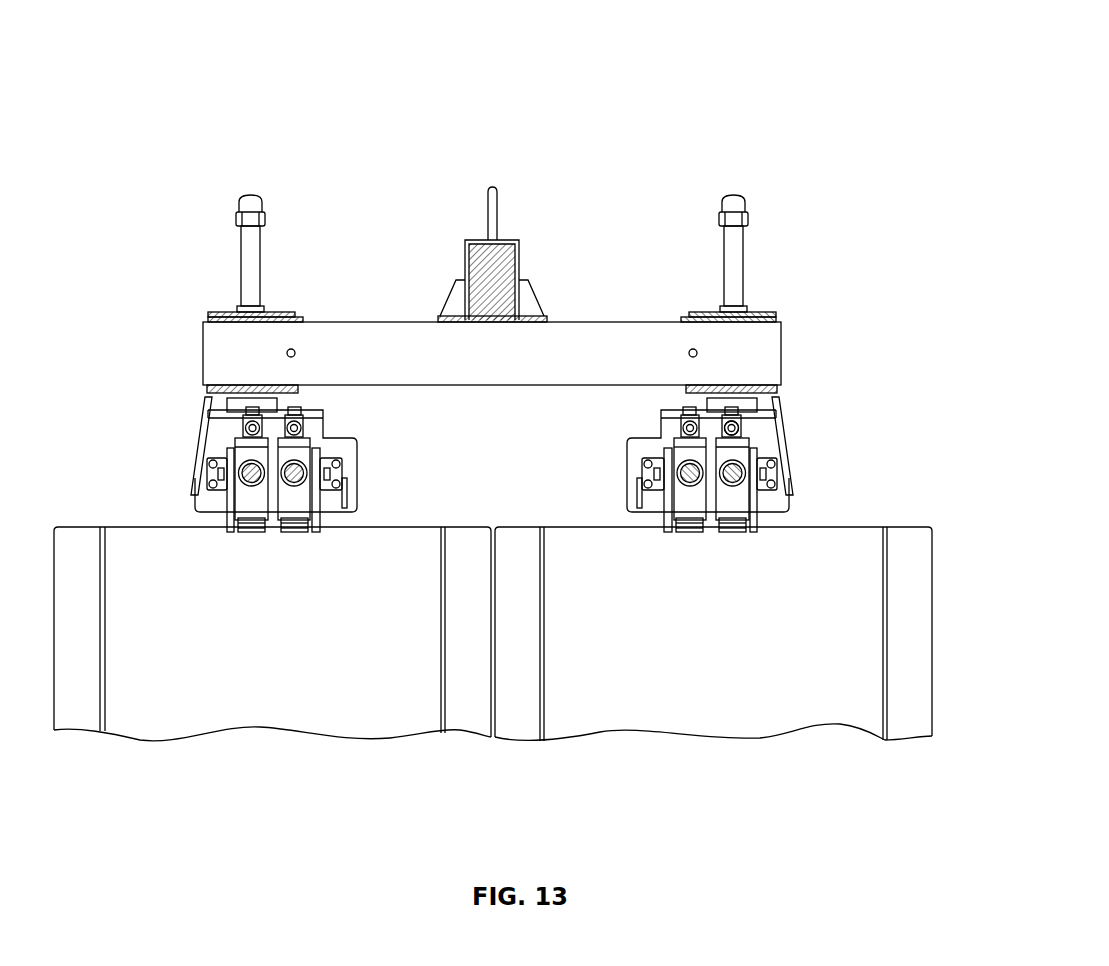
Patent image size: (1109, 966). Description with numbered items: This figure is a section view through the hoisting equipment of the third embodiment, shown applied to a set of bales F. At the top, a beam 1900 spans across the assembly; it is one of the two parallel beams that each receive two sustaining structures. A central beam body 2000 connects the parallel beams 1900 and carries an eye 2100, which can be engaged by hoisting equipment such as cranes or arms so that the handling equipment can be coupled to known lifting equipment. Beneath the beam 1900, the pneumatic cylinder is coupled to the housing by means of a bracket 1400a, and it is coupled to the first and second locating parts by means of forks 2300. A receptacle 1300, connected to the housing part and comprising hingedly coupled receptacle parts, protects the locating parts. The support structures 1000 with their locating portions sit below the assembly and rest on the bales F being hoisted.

The beam 1900 is at (608, 352).
The central beam body 2000 is at (482, 272).
The eye 2100 is at (492, 198).
The bracket 1400a is at (243, 410).
The receptacle 1300 is at (193, 457).
The fork 2300 is at (750, 432).
The support structure 1000 is at (175, 503).
The bales F is at (762, 742).